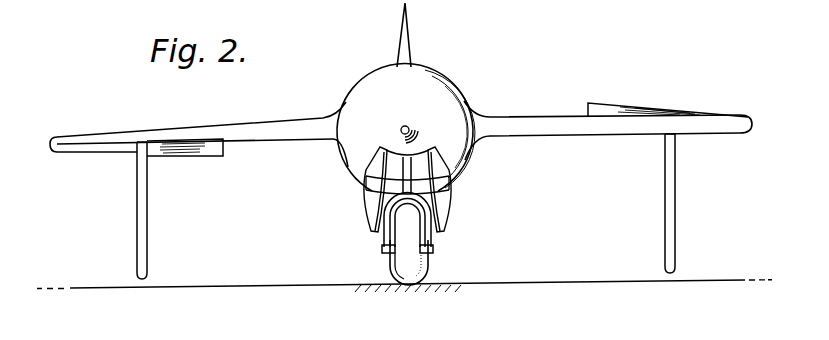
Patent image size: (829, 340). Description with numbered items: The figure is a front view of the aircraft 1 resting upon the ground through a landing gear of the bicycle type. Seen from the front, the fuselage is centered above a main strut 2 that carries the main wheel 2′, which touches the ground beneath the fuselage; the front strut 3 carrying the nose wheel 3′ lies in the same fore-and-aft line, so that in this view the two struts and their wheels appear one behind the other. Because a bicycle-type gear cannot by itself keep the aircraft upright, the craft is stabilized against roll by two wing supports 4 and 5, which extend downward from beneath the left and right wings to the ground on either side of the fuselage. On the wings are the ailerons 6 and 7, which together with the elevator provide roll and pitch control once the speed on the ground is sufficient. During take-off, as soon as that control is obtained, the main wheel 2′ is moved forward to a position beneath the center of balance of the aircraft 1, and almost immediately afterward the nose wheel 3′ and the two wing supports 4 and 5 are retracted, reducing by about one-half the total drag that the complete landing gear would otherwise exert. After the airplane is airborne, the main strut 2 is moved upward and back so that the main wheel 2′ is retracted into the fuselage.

The aircraft 1 is at (458, 98).
The main strut 2 is at (380, 205).
The main wheel 2' is at (382, 262).
The front strut 3 is at (419, 191).
The nose wheel 3' is at (408, 301).
The wing support 4 is at (147, 234).
The wing support 5 is at (675, 218).
The aileron 6 is at (198, 156).
The aileron 7 is at (620, 106).